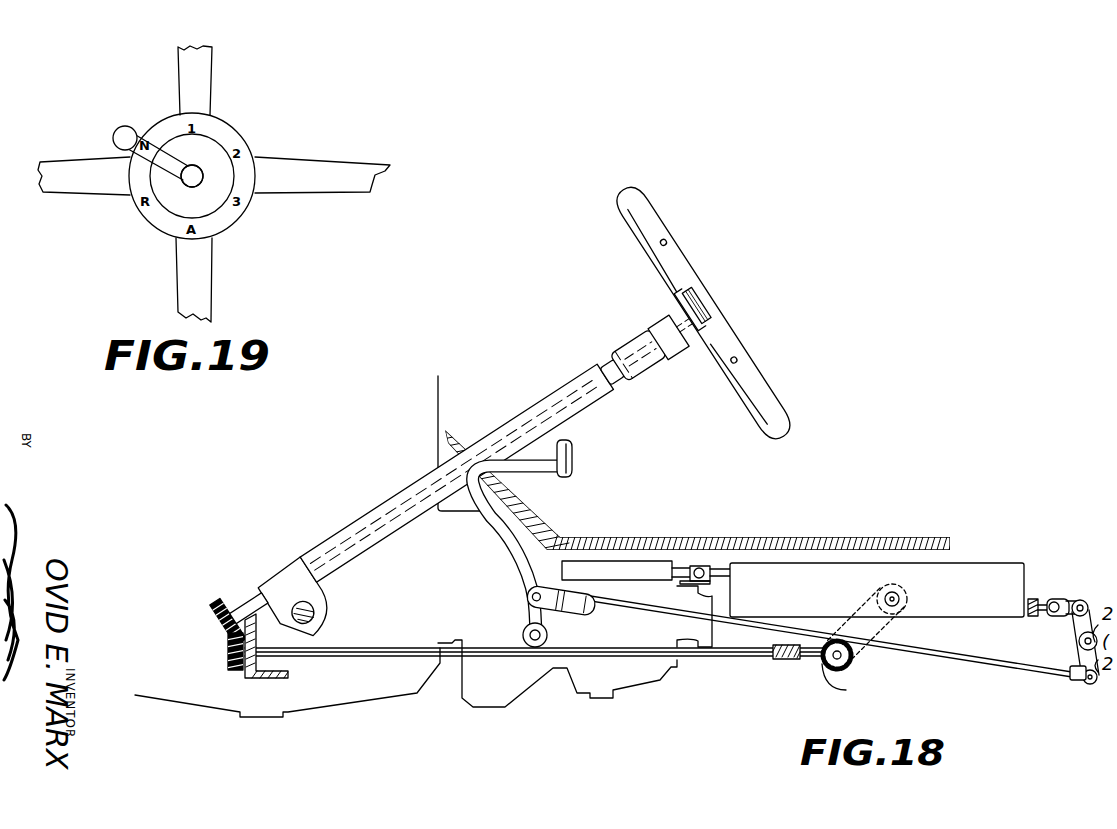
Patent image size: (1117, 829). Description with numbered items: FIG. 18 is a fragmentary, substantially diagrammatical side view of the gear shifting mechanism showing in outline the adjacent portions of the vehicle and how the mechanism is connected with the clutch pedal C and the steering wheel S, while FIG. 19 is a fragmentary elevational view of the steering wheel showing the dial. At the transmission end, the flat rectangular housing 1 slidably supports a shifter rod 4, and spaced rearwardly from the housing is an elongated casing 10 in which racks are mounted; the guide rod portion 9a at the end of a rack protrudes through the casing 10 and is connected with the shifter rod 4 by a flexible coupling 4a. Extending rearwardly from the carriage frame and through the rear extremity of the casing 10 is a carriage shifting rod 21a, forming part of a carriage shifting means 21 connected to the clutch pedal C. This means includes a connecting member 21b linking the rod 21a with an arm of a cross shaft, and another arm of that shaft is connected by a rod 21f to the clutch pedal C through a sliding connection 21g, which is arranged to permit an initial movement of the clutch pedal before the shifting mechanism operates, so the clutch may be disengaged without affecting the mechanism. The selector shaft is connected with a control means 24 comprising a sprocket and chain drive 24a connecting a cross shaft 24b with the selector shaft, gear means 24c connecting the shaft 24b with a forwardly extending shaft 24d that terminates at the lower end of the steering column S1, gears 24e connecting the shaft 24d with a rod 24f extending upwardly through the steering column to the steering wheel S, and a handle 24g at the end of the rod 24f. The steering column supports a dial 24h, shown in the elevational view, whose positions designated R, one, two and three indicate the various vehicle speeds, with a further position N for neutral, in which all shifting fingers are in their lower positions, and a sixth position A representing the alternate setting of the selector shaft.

In FIG. 19, the dial 24h is at (226, 136).
In FIG. 18, the dial 24h is at (733, 306).
In FIG. 19, the handle 24g is at (170, 170).
In FIG. 18, the handle 24g is at (725, 288).
In FIG. 18, the gears 24e is at (270, 594).
In FIG. 18, the rod 24f is at (443, 453).
In FIG. 18, the gear means 24c is at (226, 632).
In FIG. 18, the forwardly extending shaft 24d is at (735, 658).
In FIG. 18, the control means 24 is at (762, 657).
In FIG. 18, the sprocket and chain drive 24a is at (884, 618).
In FIG. 18, the cross shaft 24b is at (853, 660).
In FIG. 18, the steering column S1 is at (619, 341).
In FIG. 18, the steering wheel S is at (728, 296).
In FIG. 18, the clutch pedal C is at (536, 476).
In FIG. 18, the housing 1 is at (622, 568).
In FIG. 18, the shifter rod 4 is at (688, 568).
In FIG. 18, the flexible coupling 4a is at (700, 567).
In FIG. 18, the guide rod portion 9a is at (722, 568).
In FIG. 18, the casing 10 is at (812, 573).
In FIG. 18, the carriage shifting means 21 is at (1005, 664).
In FIG. 18, the sliding connection 21g is at (580, 606).
In FIG. 18, the carriage shifting rod 21a is at (1050, 599).
In FIG. 18, the connecting member 21b is at (1081, 601).
In FIG. 18, the rod 21f is at (1066, 673).